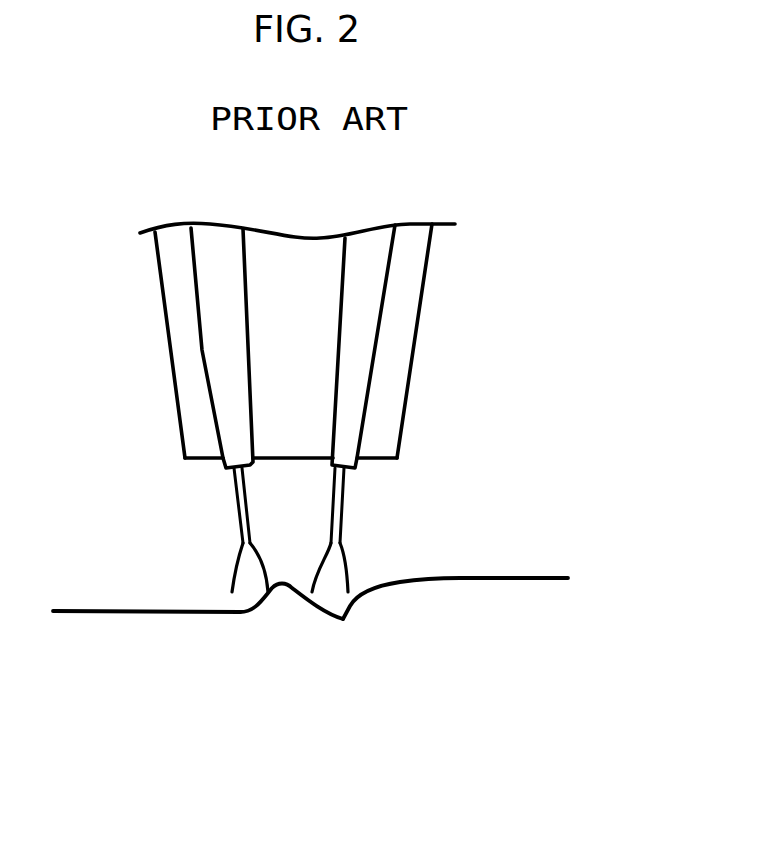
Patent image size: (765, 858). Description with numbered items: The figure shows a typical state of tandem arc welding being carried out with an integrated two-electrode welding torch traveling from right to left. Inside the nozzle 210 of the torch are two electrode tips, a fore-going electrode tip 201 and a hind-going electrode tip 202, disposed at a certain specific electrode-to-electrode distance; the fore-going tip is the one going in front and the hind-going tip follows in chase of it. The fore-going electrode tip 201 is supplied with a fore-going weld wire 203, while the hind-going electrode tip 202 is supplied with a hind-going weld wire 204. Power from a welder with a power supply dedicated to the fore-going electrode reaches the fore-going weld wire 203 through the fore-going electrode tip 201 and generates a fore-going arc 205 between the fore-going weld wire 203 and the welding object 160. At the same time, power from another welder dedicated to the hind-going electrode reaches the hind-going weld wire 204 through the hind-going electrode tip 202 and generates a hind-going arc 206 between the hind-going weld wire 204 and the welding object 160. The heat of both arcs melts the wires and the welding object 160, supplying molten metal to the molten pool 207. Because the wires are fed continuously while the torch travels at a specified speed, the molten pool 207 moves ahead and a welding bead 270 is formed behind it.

The fore-going electrode tip 201 is at (192, 262).
The hind-going electrode tip 202 is at (393, 270).
The nozzle 210 is at (422, 317).
The fore-going weld wire 203 is at (238, 503).
The hind-going weld wire 204 is at (345, 512).
The fore-going arc 205 is at (233, 572).
The hind-going arc 206 is at (347, 568).
The molten pool 207 is at (288, 615).
The welding object 160 is at (113, 627).
The welding bead 270 is at (572, 603).